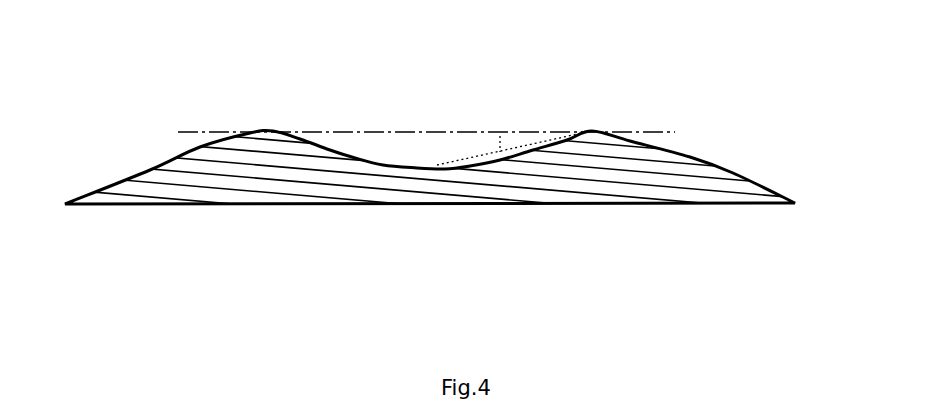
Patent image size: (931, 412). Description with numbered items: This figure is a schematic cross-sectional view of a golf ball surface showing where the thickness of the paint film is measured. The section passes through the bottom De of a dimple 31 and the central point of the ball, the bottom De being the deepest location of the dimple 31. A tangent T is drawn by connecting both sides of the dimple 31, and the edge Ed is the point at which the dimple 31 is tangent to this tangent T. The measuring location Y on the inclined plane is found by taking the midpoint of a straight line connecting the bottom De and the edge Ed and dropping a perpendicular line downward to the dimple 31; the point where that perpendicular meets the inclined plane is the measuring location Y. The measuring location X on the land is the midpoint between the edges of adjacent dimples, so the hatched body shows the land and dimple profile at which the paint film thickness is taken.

The measuring location on a land X is at (715, 166).
The tangent T is at (210, 132).
The edge Ed is at (270, 132).
The dimple 31 is at (363, 158).
The bottom of the dimple De is at (430, 165).
The measuring location on an inclined plane Y is at (505, 157).